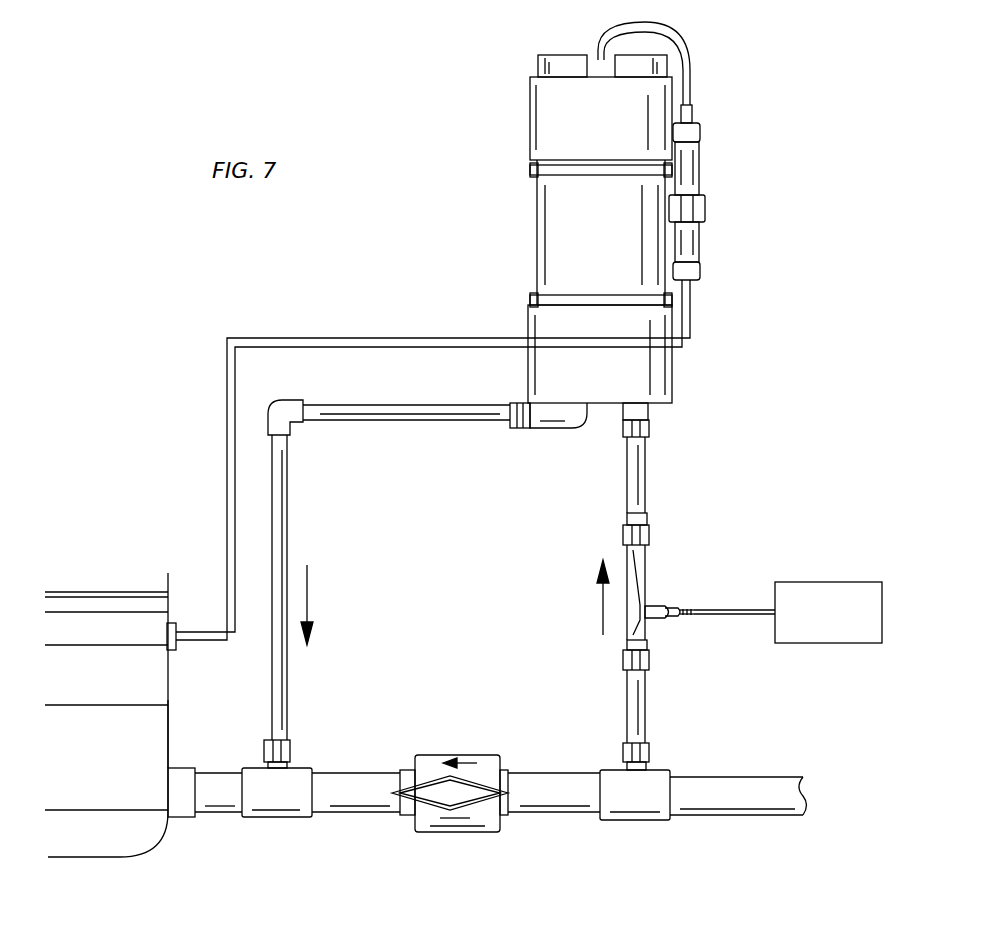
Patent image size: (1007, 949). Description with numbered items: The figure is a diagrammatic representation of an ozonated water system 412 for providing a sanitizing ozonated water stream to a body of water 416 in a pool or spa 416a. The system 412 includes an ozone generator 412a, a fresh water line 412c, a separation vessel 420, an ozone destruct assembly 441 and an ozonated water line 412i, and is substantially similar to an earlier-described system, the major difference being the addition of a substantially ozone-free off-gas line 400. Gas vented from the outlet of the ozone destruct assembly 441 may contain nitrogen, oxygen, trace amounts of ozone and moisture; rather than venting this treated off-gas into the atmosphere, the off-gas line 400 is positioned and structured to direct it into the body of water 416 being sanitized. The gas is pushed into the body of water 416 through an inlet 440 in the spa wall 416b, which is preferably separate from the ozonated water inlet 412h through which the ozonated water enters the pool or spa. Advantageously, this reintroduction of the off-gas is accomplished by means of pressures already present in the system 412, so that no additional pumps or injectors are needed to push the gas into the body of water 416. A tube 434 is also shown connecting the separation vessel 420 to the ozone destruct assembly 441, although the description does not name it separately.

The substantially ozone-free off-gas line 400 is at (333, 340).
The ozonated water system 412 is at (468, 310).
The ozone generator 412a is at (830, 628).
The fresh water line 412c is at (705, 785).
The ozonated water inlet 412h is at (172, 802).
The ozonated water line 412i is at (370, 412).
The body of water 416 is at (118, 688).
The pool or spa 416a is at (145, 853).
The spa wall 416b is at (168, 738).
The separation vessel 420 is at (535, 225).
The tube 434 is at (692, 113).
The inlet 440 is at (172, 623).
The ozone destruct assembly 441 is at (700, 248).